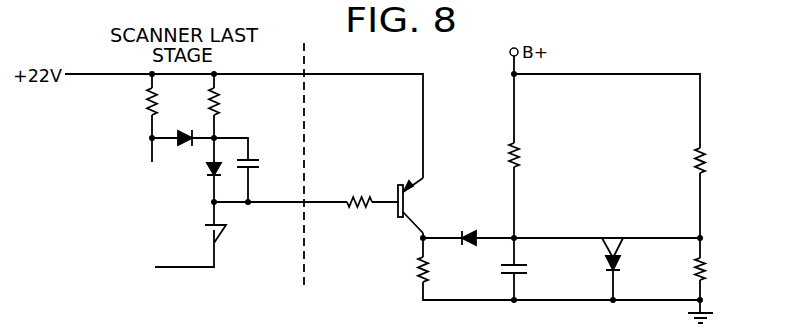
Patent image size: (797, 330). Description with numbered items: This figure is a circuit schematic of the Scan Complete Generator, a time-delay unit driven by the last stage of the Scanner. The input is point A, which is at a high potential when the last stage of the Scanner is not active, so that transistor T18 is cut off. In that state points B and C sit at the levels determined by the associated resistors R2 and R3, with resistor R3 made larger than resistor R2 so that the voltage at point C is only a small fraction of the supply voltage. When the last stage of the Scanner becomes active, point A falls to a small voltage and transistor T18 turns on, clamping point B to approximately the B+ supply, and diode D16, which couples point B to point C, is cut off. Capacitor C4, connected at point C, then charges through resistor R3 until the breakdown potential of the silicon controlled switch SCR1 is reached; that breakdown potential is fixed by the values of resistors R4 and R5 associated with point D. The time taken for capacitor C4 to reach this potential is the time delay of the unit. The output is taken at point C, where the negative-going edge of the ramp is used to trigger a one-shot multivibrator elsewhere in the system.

The transistor T18 is at (422, 205).
The resistor R2 is at (436, 270).
The resistor R3 is at (527, 155).
The resistor R4 is at (712, 160).
The resistor R5 is at (712, 271).
The capacitor C4 is at (529, 269).
The diode D16 is at (480, 228).
The silicon controlled switch SCR1 is at (634, 269).
The point A is at (276, 188).
The point B is at (437, 232).
The point C is at (529, 202).
The point D is at (714, 210).